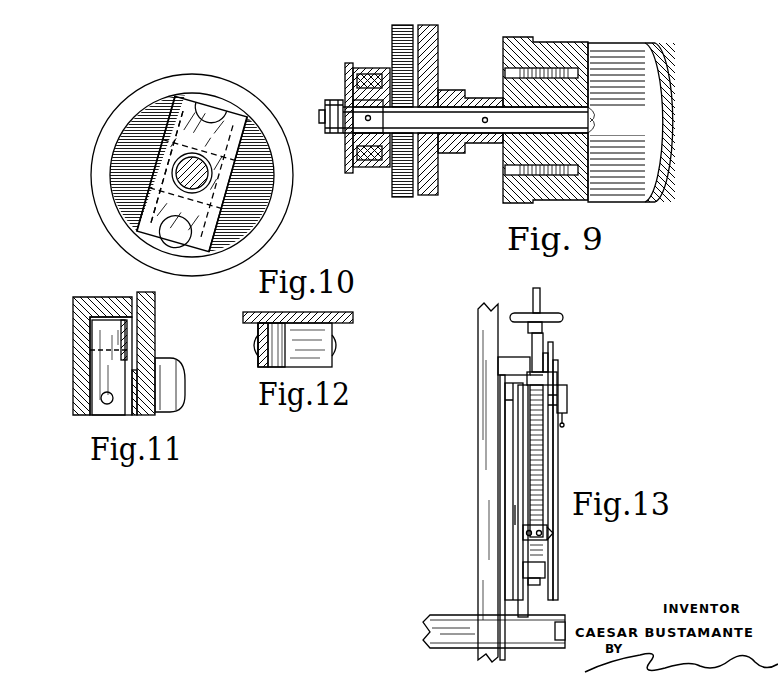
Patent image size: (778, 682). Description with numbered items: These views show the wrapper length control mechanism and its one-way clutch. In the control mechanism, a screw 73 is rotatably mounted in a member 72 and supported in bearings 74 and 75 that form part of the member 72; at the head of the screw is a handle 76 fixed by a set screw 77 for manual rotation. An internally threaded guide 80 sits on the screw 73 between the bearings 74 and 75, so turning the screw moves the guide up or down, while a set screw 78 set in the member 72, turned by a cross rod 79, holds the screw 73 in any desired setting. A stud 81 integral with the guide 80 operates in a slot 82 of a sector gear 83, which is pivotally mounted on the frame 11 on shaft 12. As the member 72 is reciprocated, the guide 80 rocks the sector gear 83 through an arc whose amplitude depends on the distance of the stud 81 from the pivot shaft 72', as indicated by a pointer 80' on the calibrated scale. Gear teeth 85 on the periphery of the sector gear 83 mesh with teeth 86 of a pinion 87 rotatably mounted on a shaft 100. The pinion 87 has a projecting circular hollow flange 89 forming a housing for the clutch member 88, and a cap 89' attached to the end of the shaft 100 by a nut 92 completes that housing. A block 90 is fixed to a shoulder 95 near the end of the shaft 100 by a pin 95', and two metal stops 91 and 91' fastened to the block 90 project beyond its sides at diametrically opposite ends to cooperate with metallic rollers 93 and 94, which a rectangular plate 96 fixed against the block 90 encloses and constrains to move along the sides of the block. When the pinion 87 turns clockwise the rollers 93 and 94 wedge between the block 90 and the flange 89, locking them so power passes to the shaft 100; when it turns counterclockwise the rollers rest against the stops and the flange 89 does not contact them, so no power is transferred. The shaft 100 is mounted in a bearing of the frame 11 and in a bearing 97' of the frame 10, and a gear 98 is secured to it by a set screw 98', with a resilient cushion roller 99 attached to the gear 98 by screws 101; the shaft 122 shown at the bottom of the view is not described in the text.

In FIG. 9, the frame 10 is at (353, 58).
In FIG. 10, the frame 11 is at (174, 58).
In FIG. 9, the frame 11 is at (432, 48).
In FIG. 13, the frame 11 is at (490, 333).
In FIG. 10, the shaft 12 is at (163, 82).
In FIG. 13, the shaft 12 is at (562, 661).
In FIG. 13, the member 72 is at (547, 501).
In FIG. 13, the pivot shaft 72' is at (493, 370).
In FIG. 13, the screw 73 is at (542, 343).
In FIG. 13, the bearing 74 is at (546, 570).
In FIG. 13, the bearing 75 is at (557, 380).
In FIG. 13, the handle 76 is at (550, 314).
In FIG. 13, the set screw 77 is at (533, 310).
In FIG. 13, the set screw 78 is at (568, 398).
In FIG. 13, the cross rod 79 is at (566, 423).
In FIG. 13, the guide 80 is at (500, 526).
In FIG. 13, the pointer 80' is at (572, 533).
In FIG. 13, the stud 81 is at (516, 522).
In FIG. 13, the slot 82 is at (497, 476).
In FIG. 13, the sector gear 83 is at (523, 600).
In FIG. 9, the gear teeth 85 is at (406, 27).
In FIG. 9, the teeth 86 is at (416, 82).
In FIG. 9, the pinion 87 is at (438, 88).
In FIG. 11, the pinion 87 is at (82, 398).
In FIG. 12, the pinion 87 is at (343, 308).
In FIG. 9, the clutch member 88 is at (340, 72).
In FIG. 10, the flange 89 is at (195, 175).
In FIG. 9, the flange 89 is at (400, 208).
In FIG. 11, the flange 89 is at (107, 285).
In FIG. 9, the cap 89' is at (338, 51).
In FIG. 11, the cap 89' is at (160, 353).
In FIG. 10, the block 90 is at (222, 205).
In FIG. 9, the block 90 is at (356, 150).
In FIG. 12, the block 90 is at (333, 362).
In FIG. 10, the stop 91 is at (137, 157).
In FIG. 11, the stop 91 is at (84, 367).
In FIG. 12, the stop 91 is at (244, 345).
In FIG. 10, the stop 91' is at (261, 184).
In FIG. 9, the stop 91' is at (310, 118).
In FIG. 12, the stop 91' is at (356, 346).
In FIG. 9, the nut 92 is at (336, 133).
In FIG. 11, the nut 92 is at (182, 360).
In FIG. 10, the roller 93 is at (203, 96).
In FIG. 9, the roller 93 is at (372, 67).
In FIG. 11, the roller 93 is at (92, 322).
In FIG. 12, the roller 93 is at (262, 360).
In FIG. 10, the roller 94 is at (190, 258).
In FIG. 9, the roller 94 is at (378, 166).
In FIG. 10, the shoulder 95 is at (153, 148).
In FIG. 9, the shoulder 95 is at (348, 119).
In FIG. 11, the shoulder 95 is at (143, 401).
In FIG. 10, the pin 95' is at (149, 155).
In FIG. 11, the pin 95' is at (84, 412).
In FIG. 12, the pin 95' is at (240, 340).
In FIG. 10, the rectangular plate 96 is at (165, 202).
In FIG. 9, the rectangular plate 96 is at (358, 80).
In FIG. 11, the rectangular plate 96 is at (128, 345).
In FIG. 12, the rectangular plate 96 is at (300, 362).
In FIG. 9, the bearing 97' is at (458, 175).
In FIG. 9, the gear 98 is at (533, 131).
In FIG. 9, the set screw 98' is at (488, 158).
In FIG. 9, the resilient cushion roller 99 is at (660, 180).
In FIG. 9, the shaft 100 is at (468, 108).
In FIG. 9, the screws 101 is at (508, 68).
In FIG. 13, the horizontal shaft 122 is at (491, 642).